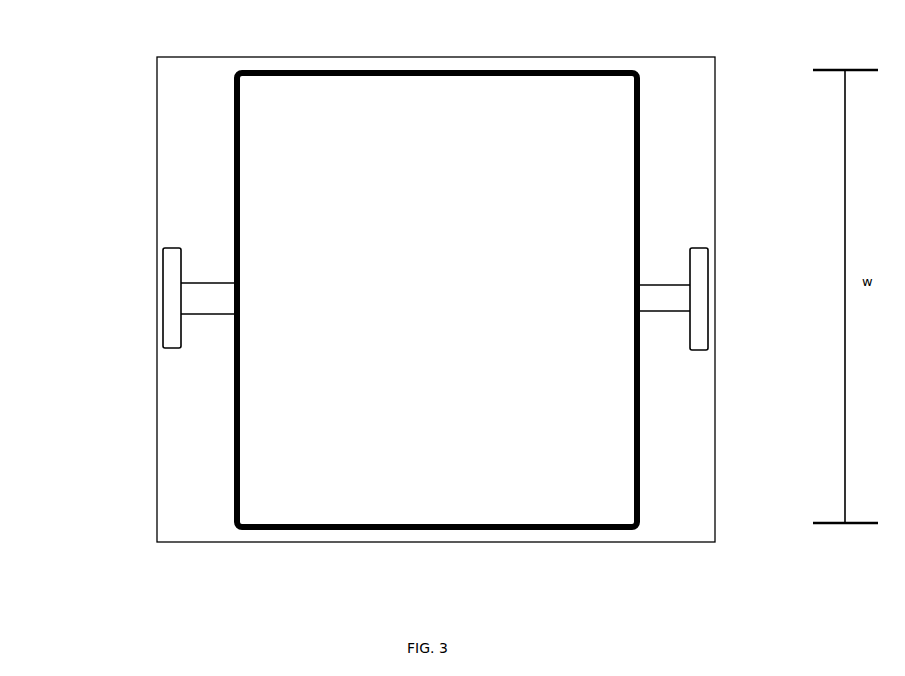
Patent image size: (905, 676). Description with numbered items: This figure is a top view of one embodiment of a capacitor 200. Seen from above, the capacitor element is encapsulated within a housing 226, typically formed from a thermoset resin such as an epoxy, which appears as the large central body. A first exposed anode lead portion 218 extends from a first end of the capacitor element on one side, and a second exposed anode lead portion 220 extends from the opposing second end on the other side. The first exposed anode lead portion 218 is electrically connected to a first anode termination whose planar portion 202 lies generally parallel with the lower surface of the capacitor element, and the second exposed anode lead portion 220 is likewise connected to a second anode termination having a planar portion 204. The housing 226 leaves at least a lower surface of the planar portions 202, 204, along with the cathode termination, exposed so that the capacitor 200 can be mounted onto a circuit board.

The capacitor 200 is at (724, 52).
The planar portion 202 is at (170, 328).
The planar portion 204 is at (697, 265).
The first exposed anode lead portion 218 is at (200, 297).
The second exposed anode lead portion 220 is at (672, 297).
The housing 226 is at (367, 503).